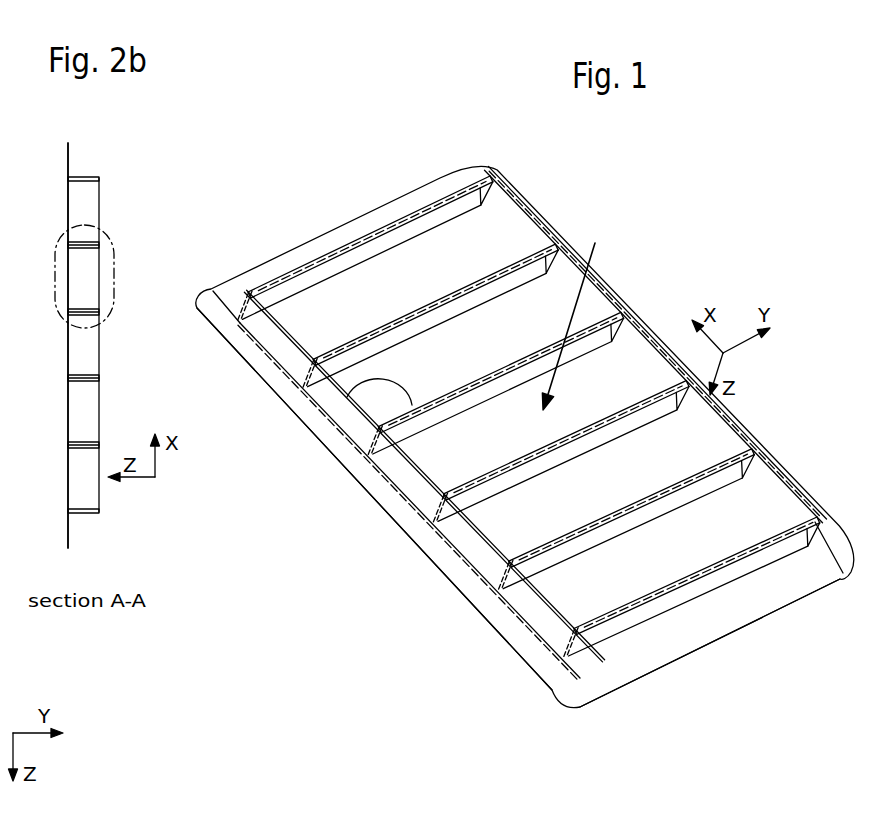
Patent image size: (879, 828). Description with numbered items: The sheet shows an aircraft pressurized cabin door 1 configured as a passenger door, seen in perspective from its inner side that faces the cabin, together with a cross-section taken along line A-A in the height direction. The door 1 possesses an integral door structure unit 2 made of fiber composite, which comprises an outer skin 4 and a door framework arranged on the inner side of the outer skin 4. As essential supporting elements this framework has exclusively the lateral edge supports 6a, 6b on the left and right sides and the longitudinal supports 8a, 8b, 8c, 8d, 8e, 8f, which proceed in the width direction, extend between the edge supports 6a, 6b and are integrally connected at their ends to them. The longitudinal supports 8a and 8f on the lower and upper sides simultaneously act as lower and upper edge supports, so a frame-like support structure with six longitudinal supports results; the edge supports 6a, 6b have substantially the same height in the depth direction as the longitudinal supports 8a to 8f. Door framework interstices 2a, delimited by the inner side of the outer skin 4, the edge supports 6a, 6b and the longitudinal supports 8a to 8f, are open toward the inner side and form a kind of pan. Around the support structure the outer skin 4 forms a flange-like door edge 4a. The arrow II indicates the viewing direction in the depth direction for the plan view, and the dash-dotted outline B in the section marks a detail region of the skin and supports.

In FIG. 1, the aircraft pressurized cabin door 1 is at (633, 255).
In FIG. 2B, the integral door structure unit 2 is at (112, 392).
In FIG. 1, the integral door structure unit 2 is at (408, 553).
In FIG. 2B, the door framework interstices 2a is at (88, 205).
In FIG. 1, the door framework interstices 2a is at (490, 232).
In FIG. 2B, the outer skin 4 is at (66, 200).
In FIG. 1, the outer skin 4 is at (275, 255).
In FIG. 2B, the flange-like door edge 4a is at (68, 148).
In FIG. 1, the flange-like door edge 4a is at (327, 442).
In FIG. 1, the lateral edge support 6a is at (400, 483).
In FIG. 1, the lateral edge support 6b is at (638, 345).
In FIG. 2B, the longitudinal support 8a is at (85, 513).
In FIG. 1, the longitudinal support 8a is at (663, 585).
In FIG. 2B, the longitudinal support 8b is at (83, 448).
In FIG. 1, the longitudinal support 8b is at (578, 528).
In FIG. 2B, the longitudinal support 8c is at (80, 381).
In FIG. 1, the longitudinal support 8c is at (522, 455).
In FIG. 2B, the longitudinal support 8d is at (83, 310).
In FIG. 1, the longitudinal support 8d is at (467, 390).
In FIG. 2B, the longitudinal support 8e is at (80, 245).
In FIG. 1, the longitudinal support 8e is at (400, 320).
In FIG. 2B, the longitudinal support 8f is at (87, 177).
In FIG. 1, the longitudinal support 8f is at (373, 230).
In FIG. 2B, the detail region B is at (113, 292).
In FIG. 1, the viewing direction arrow II is at (572, 313).